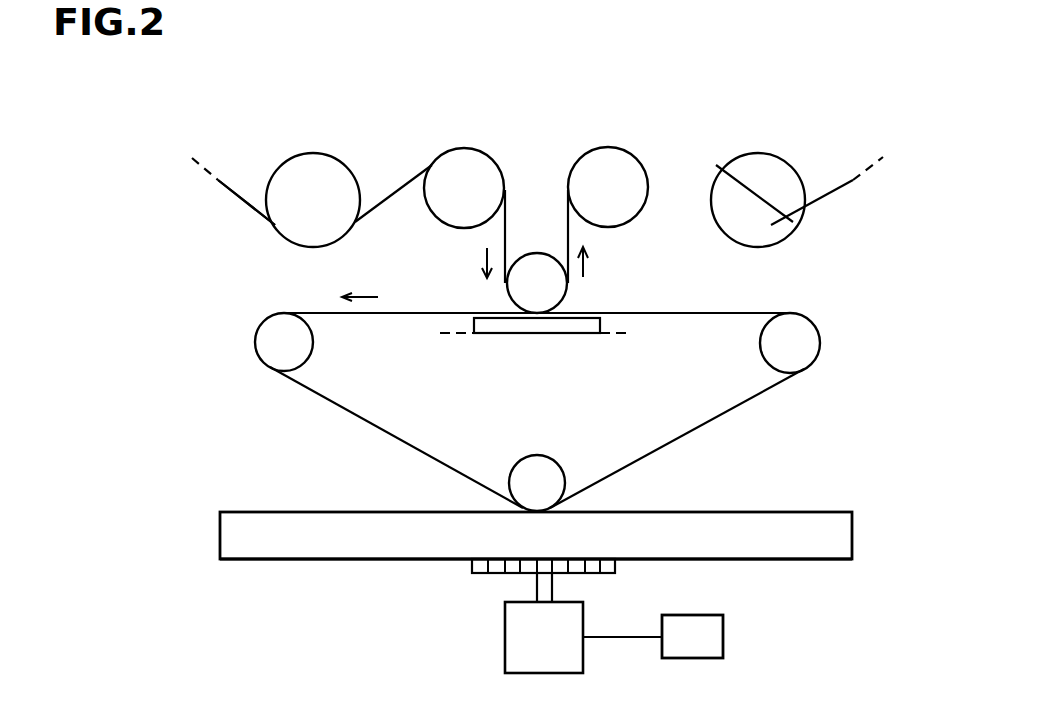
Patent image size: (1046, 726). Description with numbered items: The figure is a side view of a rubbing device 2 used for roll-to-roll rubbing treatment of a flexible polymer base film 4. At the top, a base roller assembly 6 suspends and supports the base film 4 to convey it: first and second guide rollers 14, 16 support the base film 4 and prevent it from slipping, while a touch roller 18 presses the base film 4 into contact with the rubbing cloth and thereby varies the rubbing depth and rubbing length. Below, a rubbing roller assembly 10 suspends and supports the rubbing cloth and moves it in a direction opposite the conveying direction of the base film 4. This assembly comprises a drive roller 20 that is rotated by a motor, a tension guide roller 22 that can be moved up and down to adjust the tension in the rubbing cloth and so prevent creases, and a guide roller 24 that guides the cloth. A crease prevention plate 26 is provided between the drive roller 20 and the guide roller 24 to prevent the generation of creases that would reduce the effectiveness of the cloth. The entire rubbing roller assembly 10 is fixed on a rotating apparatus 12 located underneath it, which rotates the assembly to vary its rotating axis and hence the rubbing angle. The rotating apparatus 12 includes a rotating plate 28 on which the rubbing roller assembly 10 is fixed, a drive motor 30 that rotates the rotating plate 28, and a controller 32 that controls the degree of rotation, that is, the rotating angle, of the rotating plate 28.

The rubbing device 2 is at (846, 298).
The base film 4 is at (676, 185).
The base roller assembly 6 is at (272, 232).
The rubbing roller assembly 10 is at (265, 393).
The rotating apparatus 12 is at (333, 559).
The first guide roller 14 is at (314, 172).
The second guide roller 16 is at (463, 166).
The touch roller 18 is at (560, 289).
The drive roller 20 is at (258, 341).
The tension guide roller 22 is at (558, 488).
The guide roller 24 is at (806, 347).
The crease prevention plate 26 is at (560, 333).
The rotating plate 28 is at (838, 535).
The drive motor 30 is at (505, 637).
The controller 32 is at (653, 636).